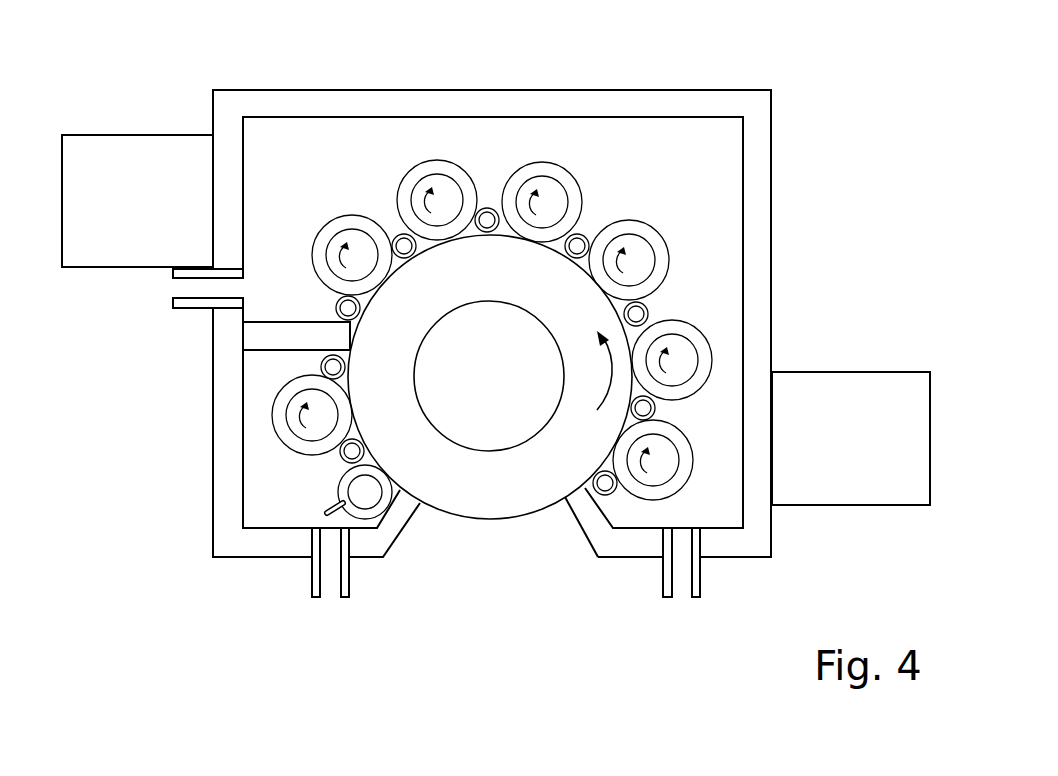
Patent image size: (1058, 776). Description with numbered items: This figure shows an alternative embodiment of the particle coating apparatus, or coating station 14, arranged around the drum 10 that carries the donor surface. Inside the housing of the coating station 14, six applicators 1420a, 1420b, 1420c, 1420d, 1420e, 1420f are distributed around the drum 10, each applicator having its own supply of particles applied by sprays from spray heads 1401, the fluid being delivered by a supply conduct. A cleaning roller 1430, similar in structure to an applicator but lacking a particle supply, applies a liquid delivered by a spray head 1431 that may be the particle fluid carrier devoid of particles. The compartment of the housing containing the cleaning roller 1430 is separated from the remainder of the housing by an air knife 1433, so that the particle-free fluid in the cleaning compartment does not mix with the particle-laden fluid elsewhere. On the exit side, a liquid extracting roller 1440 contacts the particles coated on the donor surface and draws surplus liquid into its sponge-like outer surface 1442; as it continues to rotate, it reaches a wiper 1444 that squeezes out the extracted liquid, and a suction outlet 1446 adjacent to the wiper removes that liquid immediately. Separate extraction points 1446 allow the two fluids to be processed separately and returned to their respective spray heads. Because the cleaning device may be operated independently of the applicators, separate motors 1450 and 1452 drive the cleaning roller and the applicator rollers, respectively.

The coating station 14 is at (786, 141).
The drum 10 is at (517, 503).
The air knife 1433 is at (340, 338).
The spray heads 1401 is at (585, 237).
The applicator 1420a is at (660, 470).
The applicator 1420b is at (682, 365).
The applicator 1420c is at (642, 260).
The applicator 1420d is at (545, 193).
The applicator 1420e is at (432, 188).
The applicator 1420f is at (352, 247).
The cleaning roller 1430 is at (287, 418).
The spray head 1431 is at (321, 367).
The liquid extracting roller 1440 is at (372, 495).
The outer surface 1442 is at (345, 485).
The wiper 1444 is at (323, 513).
The suction outlet 1446 is at (323, 543).
The motor 1450 is at (126, 140).
The motor 1452 is at (899, 383).